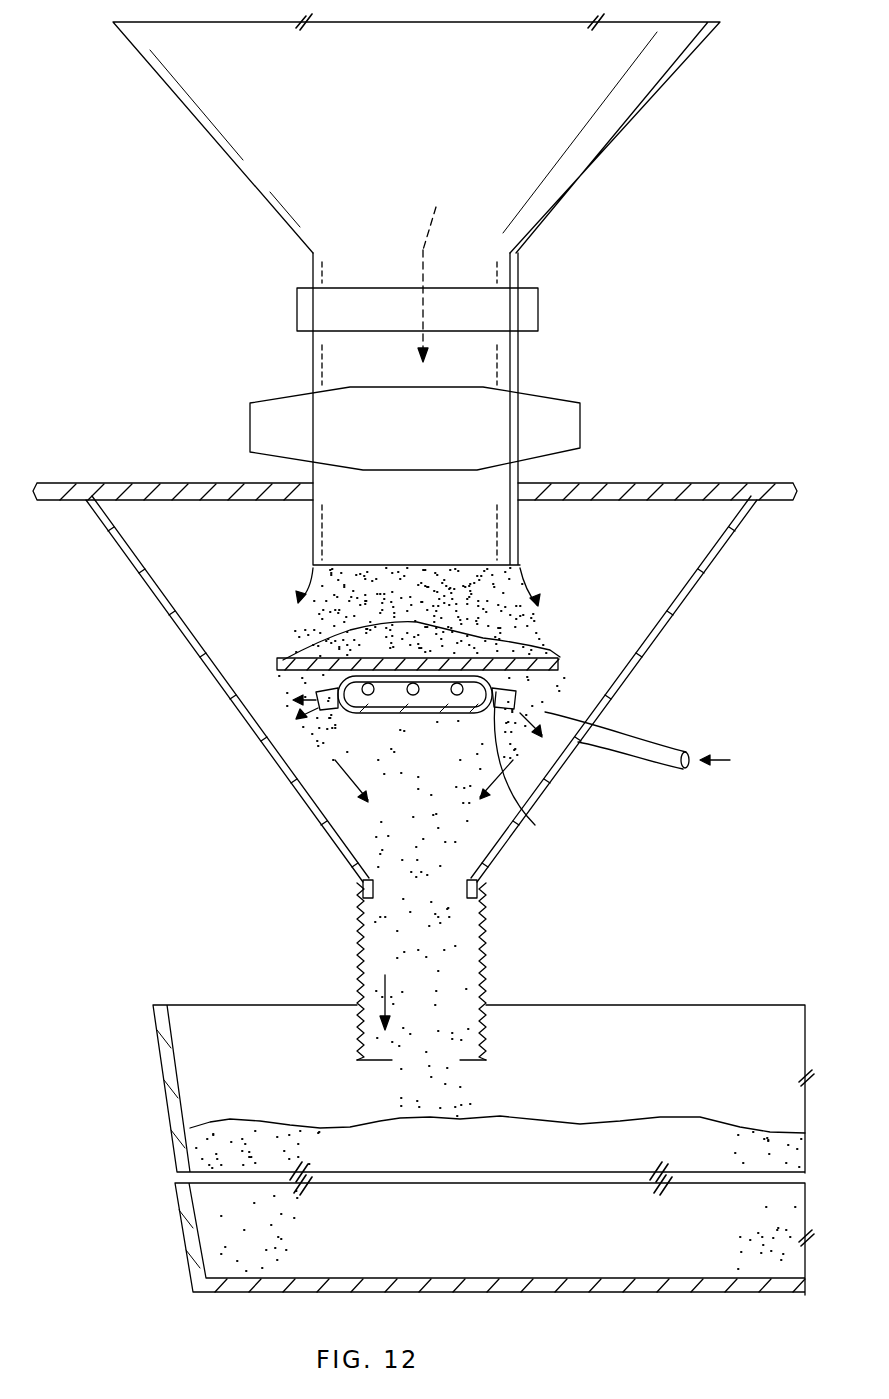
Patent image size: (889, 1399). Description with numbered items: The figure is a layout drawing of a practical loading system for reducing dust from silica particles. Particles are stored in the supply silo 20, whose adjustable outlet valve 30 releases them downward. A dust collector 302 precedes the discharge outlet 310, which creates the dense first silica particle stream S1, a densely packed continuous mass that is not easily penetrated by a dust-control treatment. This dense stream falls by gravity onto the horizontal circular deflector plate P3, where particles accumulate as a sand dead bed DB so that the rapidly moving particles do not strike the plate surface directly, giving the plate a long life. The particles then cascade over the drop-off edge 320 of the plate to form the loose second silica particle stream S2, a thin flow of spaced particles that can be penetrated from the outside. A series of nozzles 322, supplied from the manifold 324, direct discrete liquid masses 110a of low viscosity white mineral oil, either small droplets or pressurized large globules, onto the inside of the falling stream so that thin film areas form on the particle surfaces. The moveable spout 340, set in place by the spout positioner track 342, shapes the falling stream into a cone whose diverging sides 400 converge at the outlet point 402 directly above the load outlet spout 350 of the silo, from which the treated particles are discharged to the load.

The supply silo 20 is at (600, 160).
The outlet valve 30 is at (540, 302).
The dust collector 302 is at (553, 411).
The discharge outlet 310 is at (522, 522).
The spout positioner track 342 is at (772, 483).
The moveable spout 340 is at (660, 636).
The first silica particle stream S1 is at (498, 585).
The sand dead bed DB is at (470, 655).
The drop-off edge 320 is at (283, 668).
The manifold 324 is at (430, 717).
The discrete liquid masses 110a is at (333, 697).
The circular deflector plate P3 is at (300, 703).
The nozzles 322 is at (300, 757).
The second silica particle stream S2 is at (540, 776).
The diverging sides 400 is at (330, 800).
The outlet point 402 is at (432, 915).
The load outlet spout 350 is at (486, 982).